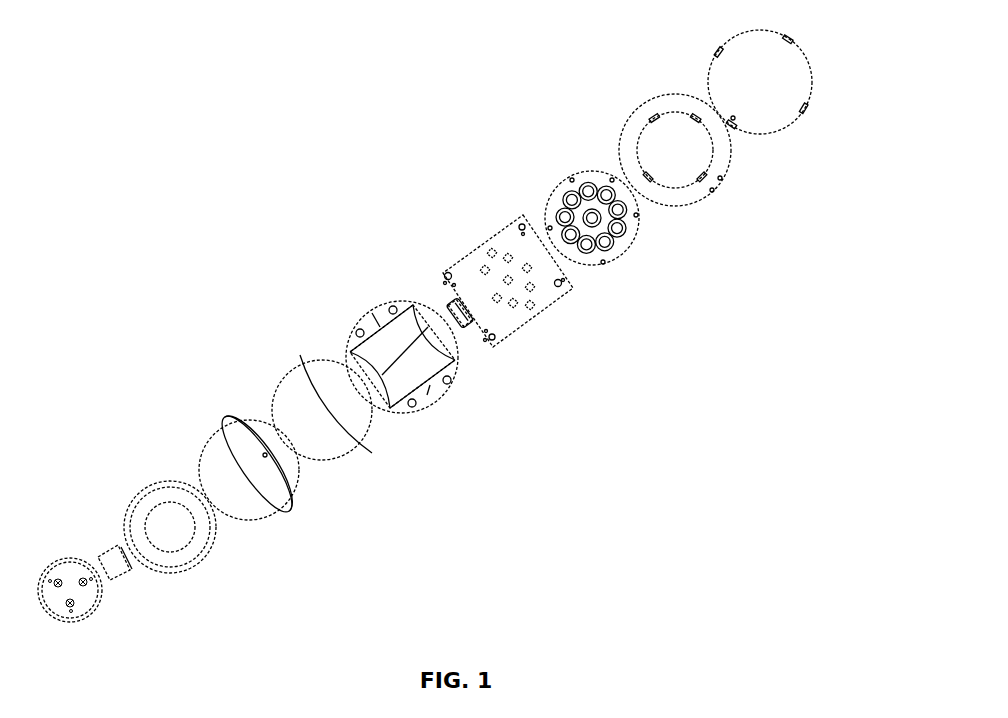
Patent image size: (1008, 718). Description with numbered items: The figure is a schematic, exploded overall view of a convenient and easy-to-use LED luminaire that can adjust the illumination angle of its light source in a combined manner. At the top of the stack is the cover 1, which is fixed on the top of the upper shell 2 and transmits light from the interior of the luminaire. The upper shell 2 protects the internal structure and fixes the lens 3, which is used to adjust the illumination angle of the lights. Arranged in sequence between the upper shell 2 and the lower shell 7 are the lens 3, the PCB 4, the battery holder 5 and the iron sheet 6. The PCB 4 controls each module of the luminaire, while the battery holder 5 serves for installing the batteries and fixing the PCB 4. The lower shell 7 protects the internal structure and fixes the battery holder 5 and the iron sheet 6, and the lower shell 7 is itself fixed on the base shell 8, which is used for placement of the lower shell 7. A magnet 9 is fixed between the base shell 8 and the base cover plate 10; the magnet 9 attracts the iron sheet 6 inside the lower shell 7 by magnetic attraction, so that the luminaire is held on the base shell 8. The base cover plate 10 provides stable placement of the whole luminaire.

The cover 1 is at (812, 72).
The upper shell 2 is at (732, 148).
The lens 3 is at (640, 217).
The PCB 4 is at (573, 288).
The battery holder 5 is at (430, 403).
The iron sheet 6 is at (372, 453).
The lower shell 7 is at (290, 512).
The base shell 8 is at (195, 565).
The magnet 9 is at (120, 577).
The base cover plate 10 is at (87, 617).